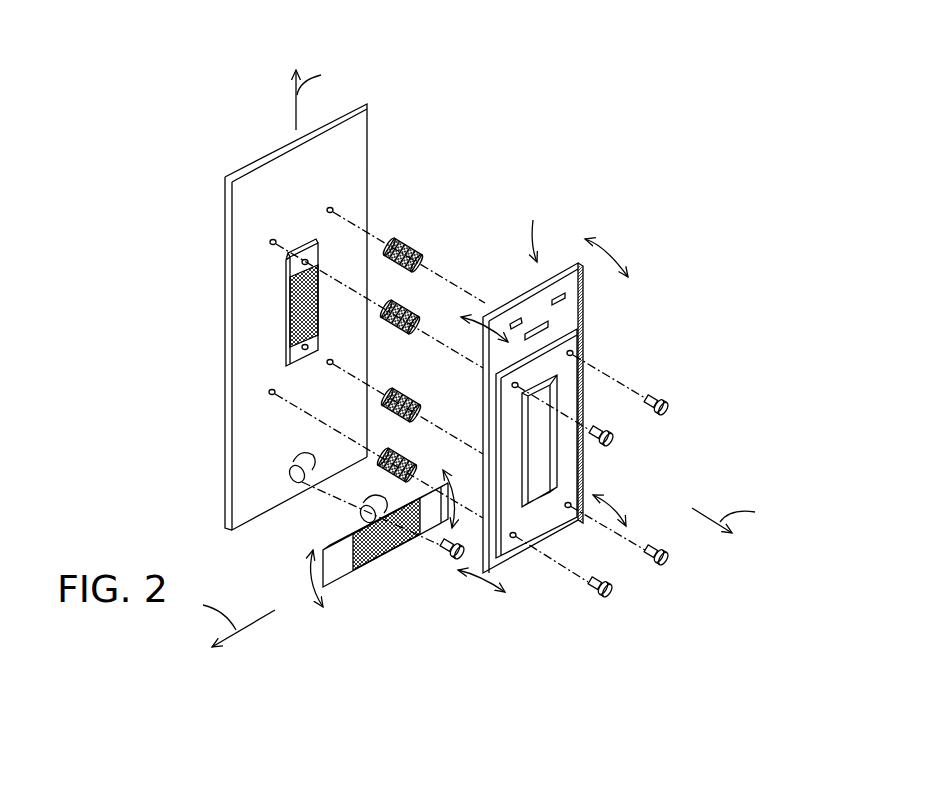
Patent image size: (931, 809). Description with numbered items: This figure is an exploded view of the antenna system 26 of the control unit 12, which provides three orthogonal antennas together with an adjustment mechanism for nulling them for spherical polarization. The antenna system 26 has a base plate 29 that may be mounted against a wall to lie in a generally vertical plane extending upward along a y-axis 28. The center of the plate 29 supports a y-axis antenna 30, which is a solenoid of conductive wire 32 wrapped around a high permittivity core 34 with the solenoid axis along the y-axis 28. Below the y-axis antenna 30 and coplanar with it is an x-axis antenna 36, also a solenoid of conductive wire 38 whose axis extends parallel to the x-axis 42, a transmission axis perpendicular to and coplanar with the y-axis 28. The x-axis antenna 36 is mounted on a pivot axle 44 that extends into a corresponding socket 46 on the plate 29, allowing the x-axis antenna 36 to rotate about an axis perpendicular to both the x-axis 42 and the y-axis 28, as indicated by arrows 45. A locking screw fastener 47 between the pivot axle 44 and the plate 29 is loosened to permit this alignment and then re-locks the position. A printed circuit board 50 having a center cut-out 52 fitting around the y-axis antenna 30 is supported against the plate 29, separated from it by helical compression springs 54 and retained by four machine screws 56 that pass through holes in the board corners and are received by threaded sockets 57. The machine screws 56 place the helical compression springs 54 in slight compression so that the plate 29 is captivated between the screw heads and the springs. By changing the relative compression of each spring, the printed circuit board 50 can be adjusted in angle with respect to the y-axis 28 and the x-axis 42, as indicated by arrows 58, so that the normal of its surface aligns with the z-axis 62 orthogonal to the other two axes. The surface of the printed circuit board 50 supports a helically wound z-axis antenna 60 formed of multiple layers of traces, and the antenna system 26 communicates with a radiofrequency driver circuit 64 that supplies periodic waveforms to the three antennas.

The control unit 12 is at (185, 105).
The antenna system 26 is at (165, 185).
The y-axis 28 is at (293, 106).
The base plate 29 is at (369, 104).
The y-axis antenna 30 is at (288, 226).
The conductive wire 32 is at (289, 340).
The high permittivity core 34 is at (301, 246).
The x-axis antenna 36 is at (326, 618).
The conductive wire 38 is at (386, 572).
The x-axis 42 is at (268, 615).
The pivot axle 44 is at (360, 514).
The arrows 45 is at (307, 580).
The socket 46 is at (283, 480).
The locking screw fastener 47 is at (449, 560).
The printed circuit board 50 is at (583, 305).
The center cut-out 52 is at (548, 458).
The helical compression springs 54 is at (418, 313).
The machine screws 56 is at (612, 441).
The threaded sockets 57 is at (333, 207).
The arrows 58 is at (607, 252).
The z-axis antenna 60 is at (585, 345).
The z-axis 62 is at (712, 525).
The radiofrequency driver circuit 64 is at (531, 228).